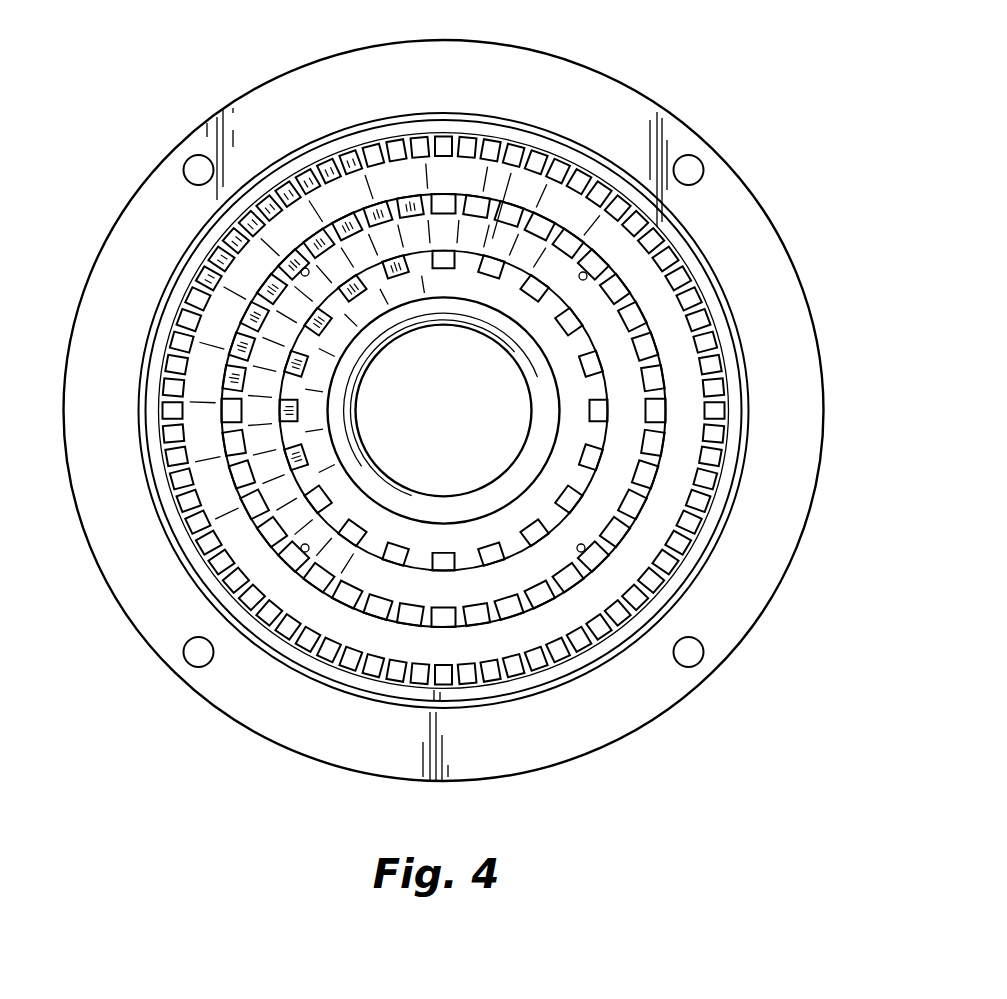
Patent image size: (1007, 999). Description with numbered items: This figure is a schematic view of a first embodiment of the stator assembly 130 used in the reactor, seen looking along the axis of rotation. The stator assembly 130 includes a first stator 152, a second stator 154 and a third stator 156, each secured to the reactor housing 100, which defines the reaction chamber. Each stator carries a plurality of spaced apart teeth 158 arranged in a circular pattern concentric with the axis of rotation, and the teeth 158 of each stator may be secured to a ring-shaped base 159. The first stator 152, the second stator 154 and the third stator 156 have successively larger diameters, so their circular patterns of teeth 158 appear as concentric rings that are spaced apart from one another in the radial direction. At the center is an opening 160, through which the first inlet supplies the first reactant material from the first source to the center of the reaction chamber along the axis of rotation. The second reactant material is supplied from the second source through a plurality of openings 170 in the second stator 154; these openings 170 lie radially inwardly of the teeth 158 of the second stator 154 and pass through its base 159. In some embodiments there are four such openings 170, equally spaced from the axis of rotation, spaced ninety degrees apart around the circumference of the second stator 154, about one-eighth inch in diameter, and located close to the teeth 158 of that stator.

The reactor housing 100 is at (135, 198).
The stator assembly 130 is at (341, 124).
The first stator 152 is at (606, 466).
The second stator 154 is at (632, 544).
The third stator 156 is at (662, 594).
The teeth 158 is at (494, 356).
The ring-shaped base 159 is at (533, 297).
The opening 160 is at (444, 410).
The openings 170 is at (301, 270).